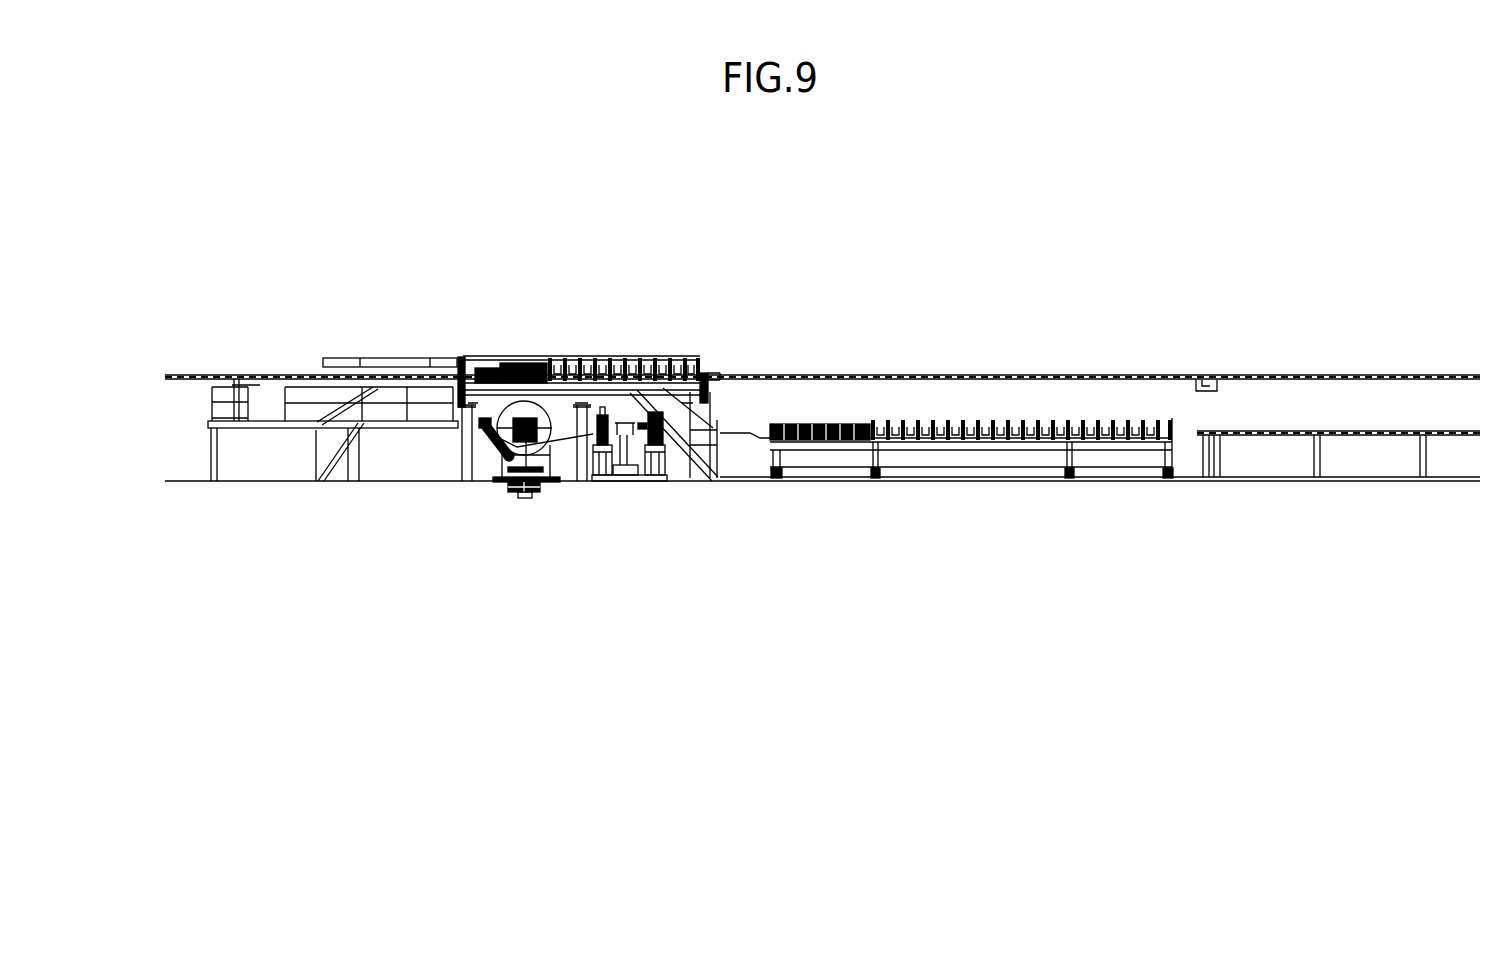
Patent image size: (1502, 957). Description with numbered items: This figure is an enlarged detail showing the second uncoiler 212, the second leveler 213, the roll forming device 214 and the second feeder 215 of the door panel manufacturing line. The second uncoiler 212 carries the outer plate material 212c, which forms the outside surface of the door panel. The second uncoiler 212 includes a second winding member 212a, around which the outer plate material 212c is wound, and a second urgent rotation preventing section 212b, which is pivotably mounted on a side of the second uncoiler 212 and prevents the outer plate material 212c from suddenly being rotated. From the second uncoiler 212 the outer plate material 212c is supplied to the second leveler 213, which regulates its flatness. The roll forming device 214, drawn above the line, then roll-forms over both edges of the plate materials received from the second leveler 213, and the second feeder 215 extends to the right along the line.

The second uncoiler 212 is at (483, 481).
The second winding member 212a is at (527, 400).
The second urgent rotation preventing section 212b is at (460, 417).
The outer plate material 212c is at (723, 435).
The second leveler 213 is at (614, 470).
The roll forming device 214 is at (657, 357).
The second feeder 215 is at (927, 446).